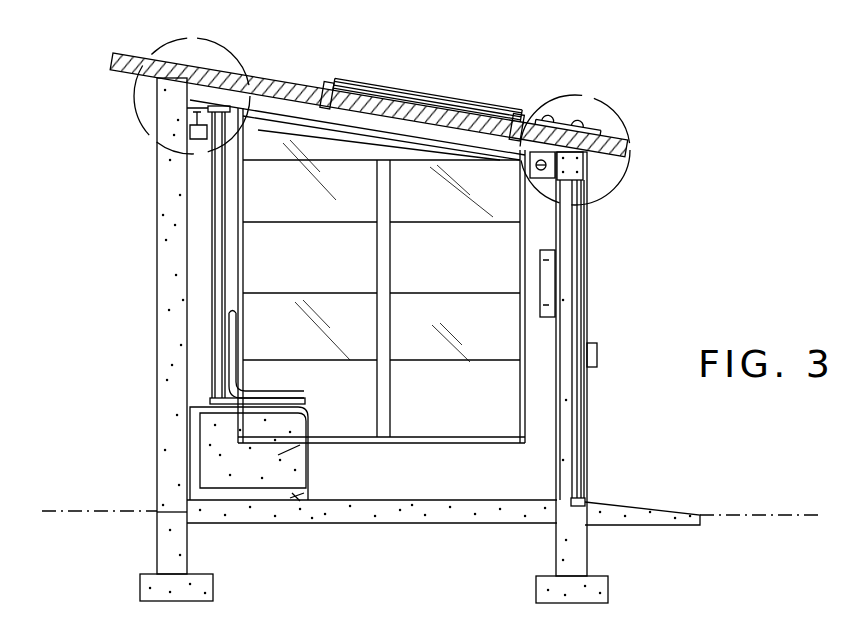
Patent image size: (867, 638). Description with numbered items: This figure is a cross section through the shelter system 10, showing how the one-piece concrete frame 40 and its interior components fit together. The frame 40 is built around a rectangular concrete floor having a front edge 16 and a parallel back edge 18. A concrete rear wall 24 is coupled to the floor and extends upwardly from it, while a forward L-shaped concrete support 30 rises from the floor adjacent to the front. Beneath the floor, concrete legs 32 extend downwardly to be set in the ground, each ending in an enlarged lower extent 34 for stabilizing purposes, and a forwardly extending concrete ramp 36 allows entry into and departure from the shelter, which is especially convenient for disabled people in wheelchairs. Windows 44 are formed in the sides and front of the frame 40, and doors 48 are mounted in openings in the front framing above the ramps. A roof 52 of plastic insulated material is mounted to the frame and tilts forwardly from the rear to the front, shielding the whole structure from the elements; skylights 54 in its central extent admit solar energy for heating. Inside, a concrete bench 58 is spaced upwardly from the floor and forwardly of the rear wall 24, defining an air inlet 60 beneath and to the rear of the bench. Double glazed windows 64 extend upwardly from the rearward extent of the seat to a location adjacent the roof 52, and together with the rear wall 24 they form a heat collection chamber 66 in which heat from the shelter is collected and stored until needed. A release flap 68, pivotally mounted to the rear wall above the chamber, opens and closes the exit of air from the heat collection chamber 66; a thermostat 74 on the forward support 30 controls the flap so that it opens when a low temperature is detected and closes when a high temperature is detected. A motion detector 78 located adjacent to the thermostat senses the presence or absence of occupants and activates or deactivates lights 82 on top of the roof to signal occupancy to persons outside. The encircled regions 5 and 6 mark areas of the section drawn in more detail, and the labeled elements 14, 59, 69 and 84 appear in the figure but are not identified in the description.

The system 10 is at (120, 131).
The detail circle FIG. 5 is at (233, 53).
The detail circle FIG. 6 is at (621, 118).
The floor slab 14 is at (470, 516).
The front edge 16 is at (590, 530).
The back edge 18 is at (157, 517).
The concrete rear wall 24 is at (157, 353).
The forward L-shaped concrete supports 30 is at (578, 172).
The concrete legs 32 is at (190, 553).
The enlarged lower extents 34 is at (606, 600).
The forwardly extending concrete ramps 36 is at (660, 510).
The frame 40 is at (157, 497).
The windows 44 is at (335, 160).
The doors 48 is at (578, 412).
The roof 52 is at (287, 75).
The skylights 54 is at (413, 97).
The concrete bench 58 is at (306, 440).
The supply pipe 59 is at (252, 398).
The air inlet 60 is at (290, 499).
The double glazed windows 64 is at (222, 285).
The heat collection chamber 66 is at (205, 222).
The release flap 68 is at (208, 108).
The tab 69 is at (597, 350).
The thermostat 74 is at (550, 282).
The motion detector 78 is at (533, 180).
The lights 82 is at (552, 112).
The roof clip 84 is at (598, 124).